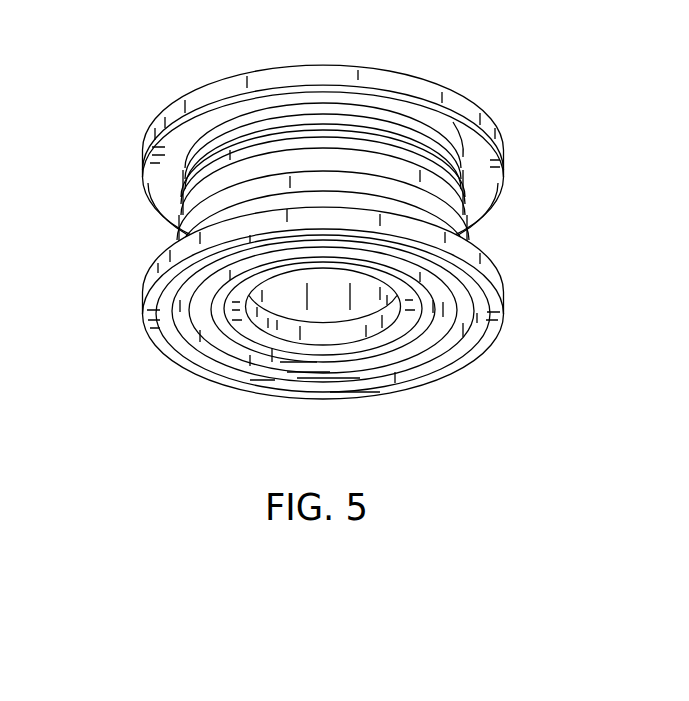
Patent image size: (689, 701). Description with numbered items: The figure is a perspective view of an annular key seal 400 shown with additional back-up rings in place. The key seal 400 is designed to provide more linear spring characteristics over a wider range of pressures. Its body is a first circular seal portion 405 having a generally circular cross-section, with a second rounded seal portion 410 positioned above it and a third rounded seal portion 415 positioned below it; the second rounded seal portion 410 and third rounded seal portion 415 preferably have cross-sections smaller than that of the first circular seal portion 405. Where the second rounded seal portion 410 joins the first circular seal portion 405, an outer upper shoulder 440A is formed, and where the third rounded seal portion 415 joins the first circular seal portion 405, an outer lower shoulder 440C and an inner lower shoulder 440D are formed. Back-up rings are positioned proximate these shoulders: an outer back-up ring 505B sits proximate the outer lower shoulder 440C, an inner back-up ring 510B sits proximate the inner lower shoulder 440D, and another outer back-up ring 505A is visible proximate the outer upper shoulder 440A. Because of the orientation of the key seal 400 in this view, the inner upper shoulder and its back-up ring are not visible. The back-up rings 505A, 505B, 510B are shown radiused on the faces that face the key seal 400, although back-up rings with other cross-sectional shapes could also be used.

The key seal 400 is at (130, 265).
The first circular seal portion 405 is at (143, 217).
The second rounded seal portion 410 is at (357, 107).
The third rounded seal portion 415 is at (436, 342).
The outer upper shoulder 440A is at (470, 148).
The outer lower shoulder 440C is at (480, 308).
The inner lower shoulder 440D is at (293, 277).
The outer back-up ring 505A is at (223, 75).
The outer back-up ring 505B is at (150, 328).
The inner back-up ring 510B is at (274, 338).